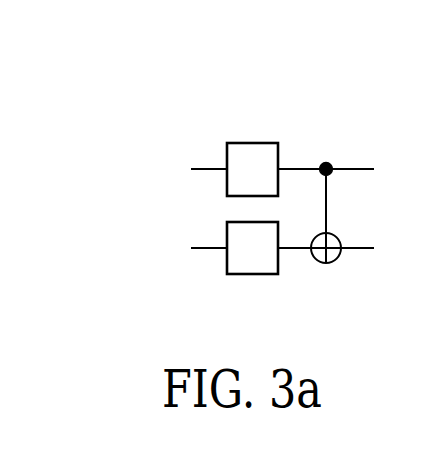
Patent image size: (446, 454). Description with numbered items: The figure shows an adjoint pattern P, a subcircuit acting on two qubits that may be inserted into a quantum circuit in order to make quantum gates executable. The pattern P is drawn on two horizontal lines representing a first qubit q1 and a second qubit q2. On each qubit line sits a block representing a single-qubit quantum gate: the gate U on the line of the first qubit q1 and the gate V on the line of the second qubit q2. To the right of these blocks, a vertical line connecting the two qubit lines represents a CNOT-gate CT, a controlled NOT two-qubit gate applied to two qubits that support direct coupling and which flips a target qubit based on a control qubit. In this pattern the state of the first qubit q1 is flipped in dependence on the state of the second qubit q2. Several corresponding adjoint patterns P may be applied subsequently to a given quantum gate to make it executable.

The adjoint pattern P is at (82, 92).
The single-qubit quantum gate U is at (252, 143).
The single-qubit quantum gate V is at (252, 274).
The CNOT-gate CT is at (359, 282).
The first qubit q1 is at (247, 160).
The second qubit q2 is at (247, 237).